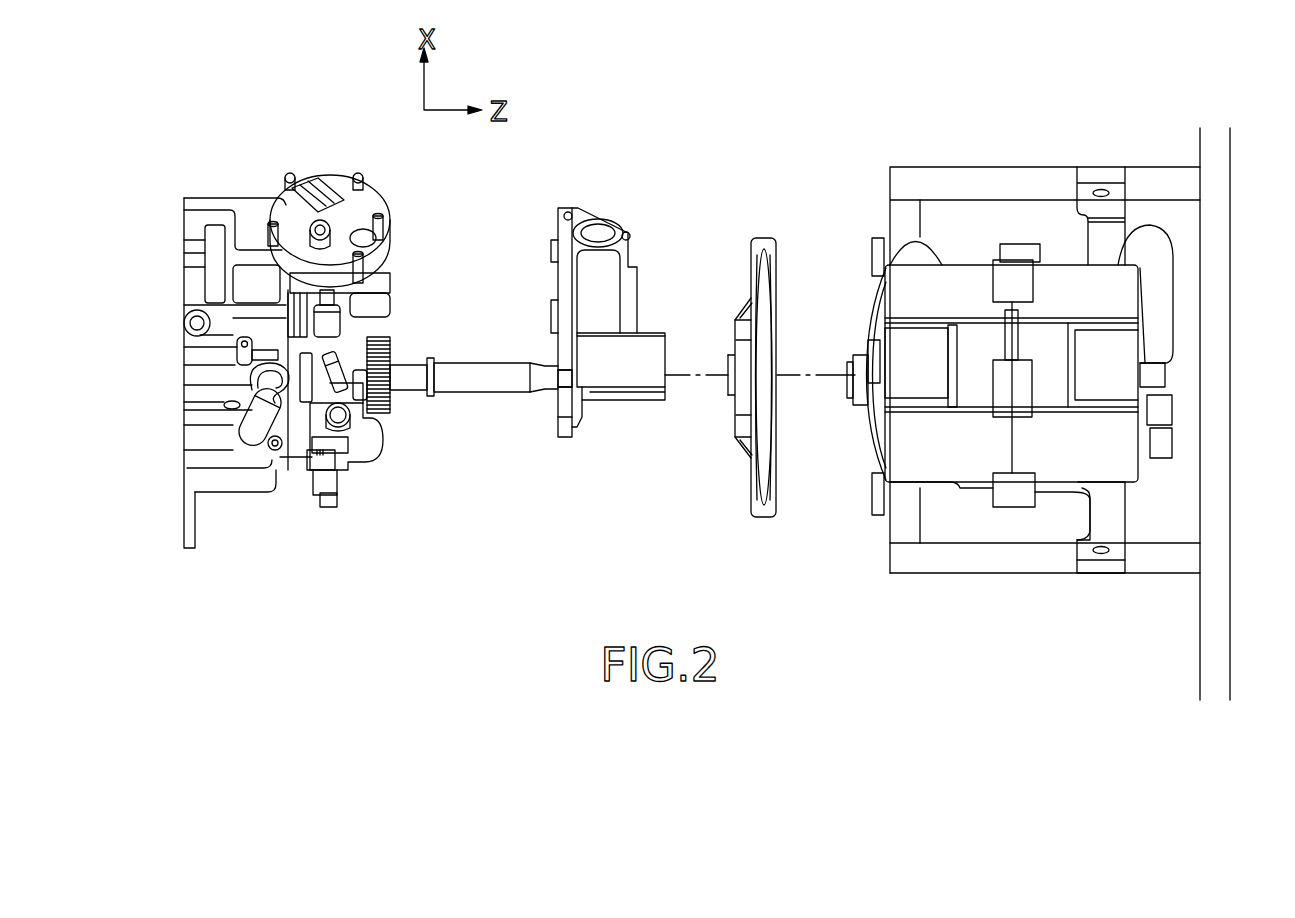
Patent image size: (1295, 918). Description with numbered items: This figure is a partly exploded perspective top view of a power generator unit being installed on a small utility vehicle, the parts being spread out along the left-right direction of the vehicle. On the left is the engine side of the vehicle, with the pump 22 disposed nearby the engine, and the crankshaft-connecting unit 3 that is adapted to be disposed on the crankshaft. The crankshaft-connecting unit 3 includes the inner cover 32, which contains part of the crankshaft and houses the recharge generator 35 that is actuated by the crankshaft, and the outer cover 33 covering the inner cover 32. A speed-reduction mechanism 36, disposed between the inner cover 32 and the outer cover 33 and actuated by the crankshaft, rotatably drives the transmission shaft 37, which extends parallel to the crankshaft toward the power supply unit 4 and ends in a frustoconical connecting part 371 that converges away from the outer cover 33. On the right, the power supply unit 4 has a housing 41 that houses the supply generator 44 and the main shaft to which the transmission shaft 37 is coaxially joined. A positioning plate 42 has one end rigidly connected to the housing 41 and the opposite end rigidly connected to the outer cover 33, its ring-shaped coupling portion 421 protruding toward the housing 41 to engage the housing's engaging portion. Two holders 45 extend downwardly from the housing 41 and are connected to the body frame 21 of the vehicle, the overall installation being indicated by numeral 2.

The frame 2 is at (1060, 414).
The body frame 21 is at (1016, 565).
The pump 22 is at (331, 522).
The crankshaft-connecting unit 3 is at (476, 344).
The inner cover 32 is at (250, 200).
The outer cover 33 is at (615, 398).
The recharge generator 35 is at (246, 287).
The speed-reduction mechanism 36 is at (382, 418).
The transmission shaft 37 is at (481, 404).
The connecting part 371 is at (543, 374).
The power supply unit 4 is at (1062, 367).
The housing 41 is at (969, 503).
The positioning plate 42 is at (767, 325).
The coupling portion 421 is at (772, 420).
The supply generator 44 is at (1050, 347).
The holder 45 is at (1105, 177).